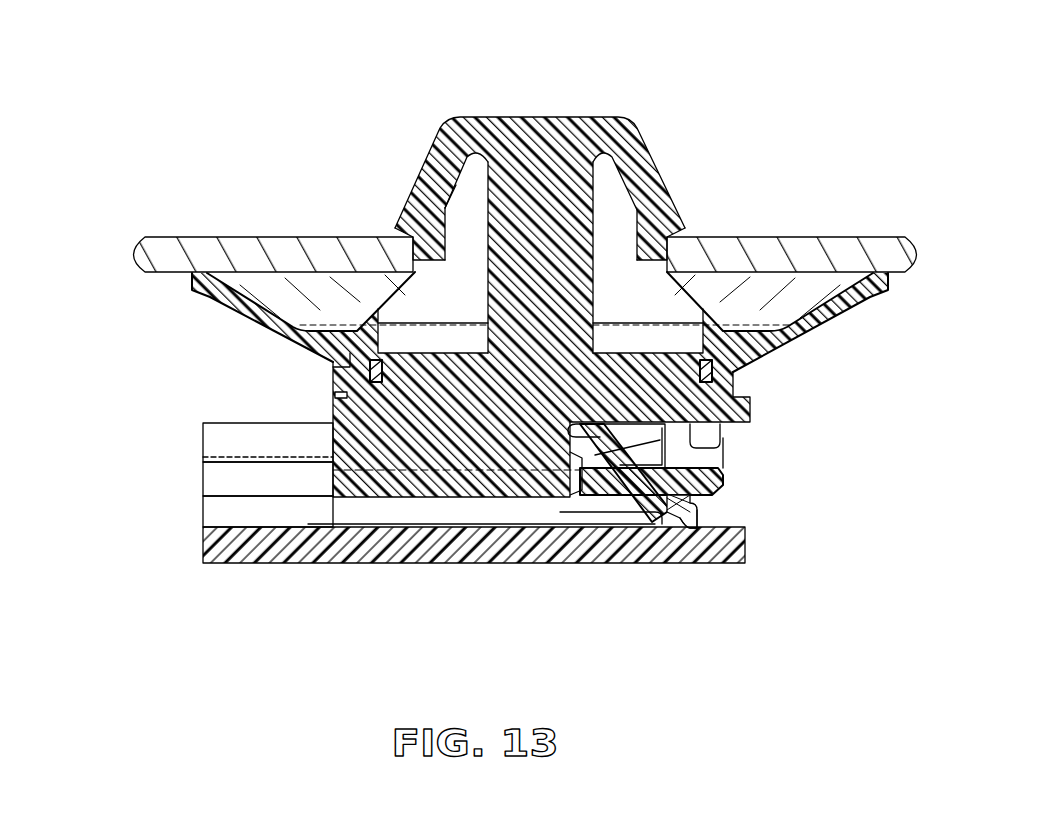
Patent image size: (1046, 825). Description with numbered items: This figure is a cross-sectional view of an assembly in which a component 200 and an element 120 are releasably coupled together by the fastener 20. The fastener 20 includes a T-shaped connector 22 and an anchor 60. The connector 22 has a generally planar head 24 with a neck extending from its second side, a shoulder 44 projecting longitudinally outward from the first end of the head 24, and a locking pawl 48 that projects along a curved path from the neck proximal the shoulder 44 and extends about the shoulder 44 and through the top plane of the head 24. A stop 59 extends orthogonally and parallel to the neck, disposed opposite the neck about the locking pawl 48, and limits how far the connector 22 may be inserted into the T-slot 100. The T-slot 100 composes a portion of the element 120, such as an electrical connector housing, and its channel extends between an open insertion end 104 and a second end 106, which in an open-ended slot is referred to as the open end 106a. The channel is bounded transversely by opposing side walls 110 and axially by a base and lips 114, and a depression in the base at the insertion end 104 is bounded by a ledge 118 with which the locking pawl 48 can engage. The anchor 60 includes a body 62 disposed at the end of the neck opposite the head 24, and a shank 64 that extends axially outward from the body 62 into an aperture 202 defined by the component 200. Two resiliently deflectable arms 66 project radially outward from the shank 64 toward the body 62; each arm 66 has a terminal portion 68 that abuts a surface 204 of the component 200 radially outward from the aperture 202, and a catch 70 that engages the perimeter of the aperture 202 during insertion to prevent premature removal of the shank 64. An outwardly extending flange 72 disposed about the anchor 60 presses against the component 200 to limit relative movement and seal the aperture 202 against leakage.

The fastener 20 is at (499, 250).
The connector 22 is at (717, 531).
The head 24 is at (371, 488).
The shoulder 44 is at (588, 476).
The locking pawl 48 is at (723, 437).
The stop 59 is at (727, 440).
The anchor 60 is at (533, 344).
The body 62 is at (345, 392).
The shank 64 is at (522, 185).
The arms 66 is at (445, 168).
The terminal portion 68 is at (408, 250).
The catch 70 is at (460, 247).
The flange 72 is at (262, 318).
The T-slot 100 is at (418, 508).
The insertion end 104 is at (692, 512).
The second end 106 is at (205, 513).
The open end 106a is at (258, 478).
The side walls 110 is at (205, 478).
The lips 114 is at (205, 443).
The ledge 118 is at (688, 518).
The element 120 is at (205, 552).
The component 200 is at (175, 250).
The aperture 202 is at (435, 195).
The surface 204 is at (880, 245).